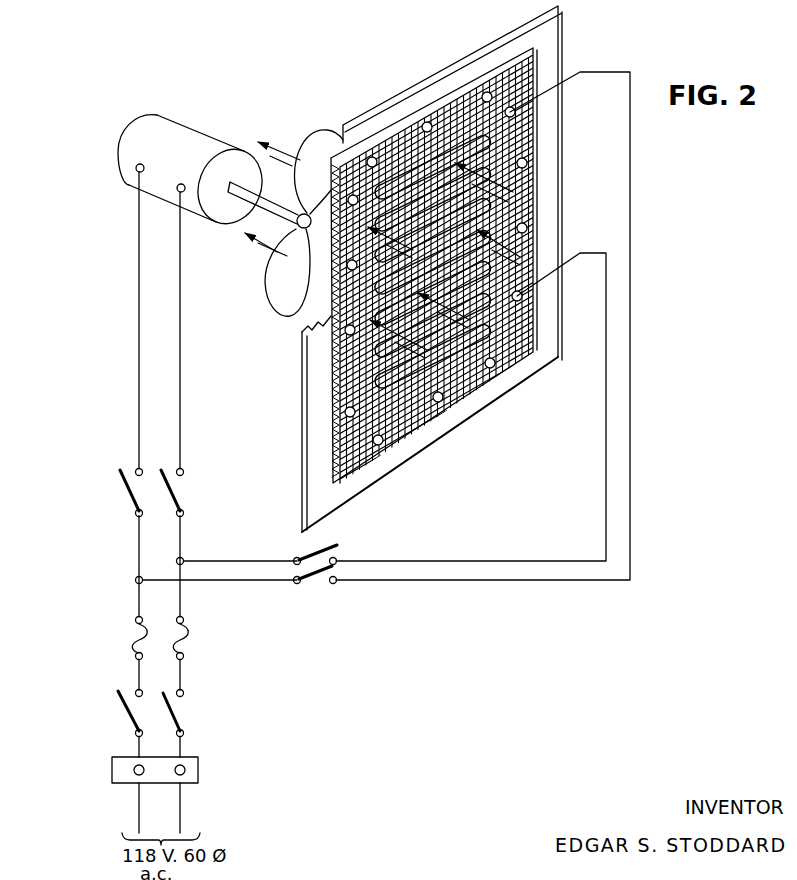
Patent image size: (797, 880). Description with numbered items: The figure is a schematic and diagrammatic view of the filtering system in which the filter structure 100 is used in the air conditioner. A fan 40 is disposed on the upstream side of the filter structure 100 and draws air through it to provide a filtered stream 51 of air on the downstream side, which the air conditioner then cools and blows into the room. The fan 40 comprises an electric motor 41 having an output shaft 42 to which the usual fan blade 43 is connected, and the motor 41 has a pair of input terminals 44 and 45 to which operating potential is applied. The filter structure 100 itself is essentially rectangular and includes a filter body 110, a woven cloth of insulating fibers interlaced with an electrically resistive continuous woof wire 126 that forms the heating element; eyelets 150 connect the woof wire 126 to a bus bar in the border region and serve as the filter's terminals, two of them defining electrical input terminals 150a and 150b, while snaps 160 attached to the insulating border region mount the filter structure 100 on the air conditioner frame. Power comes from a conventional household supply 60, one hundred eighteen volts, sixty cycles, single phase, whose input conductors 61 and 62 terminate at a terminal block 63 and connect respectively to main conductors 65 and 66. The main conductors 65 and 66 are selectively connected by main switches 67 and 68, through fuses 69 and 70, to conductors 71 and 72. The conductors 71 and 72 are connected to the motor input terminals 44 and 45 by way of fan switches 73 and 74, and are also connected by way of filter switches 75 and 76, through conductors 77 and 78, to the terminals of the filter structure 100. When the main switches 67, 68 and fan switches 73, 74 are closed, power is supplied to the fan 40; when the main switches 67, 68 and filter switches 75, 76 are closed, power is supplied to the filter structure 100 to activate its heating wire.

The filter structure 100 is at (605, 50).
The filter body 110 is at (546, 56).
The woof wire 126 is at (400, 158).
The eyelets 150 is at (541, 265).
The electrical input terminal 150a is at (523, 298).
The screen terminal 150b is at (516, 113).
The snaps 160 is at (528, 164).
The fan 40 is at (219, 127).
The electric motor 41 is at (168, 135).
The output shaft 42 is at (270, 206).
The fan blade 43 is at (318, 143).
The filtered stream 51 is at (265, 250).
The input terminal 44 is at (137, 170).
The input terminal 45 is at (178, 189).
The A.C. Edison supply 60 is at (98, 748).
The input conductor 61 is at (180, 803).
The input conductor 62 is at (137, 802).
The terminal block 63 is at (193, 772).
The main conductor 65 is at (180, 745).
The main conductor 66 is at (136, 748).
The main switch 67 is at (173, 698).
The main switch 68 is at (118, 692).
The fuse 69 is at (182, 640).
The fuse 70 is at (135, 637).
The conductor 71 is at (182, 600).
The conductor 72 is at (138, 600).
The fan switch 73 is at (173, 489).
The fan switch 74 is at (123, 489).
The filter switch 75 is at (337, 546).
The filter switch 76 is at (322, 575).
The conductor 77 is at (605, 463).
The conductor 78 is at (630, 467).